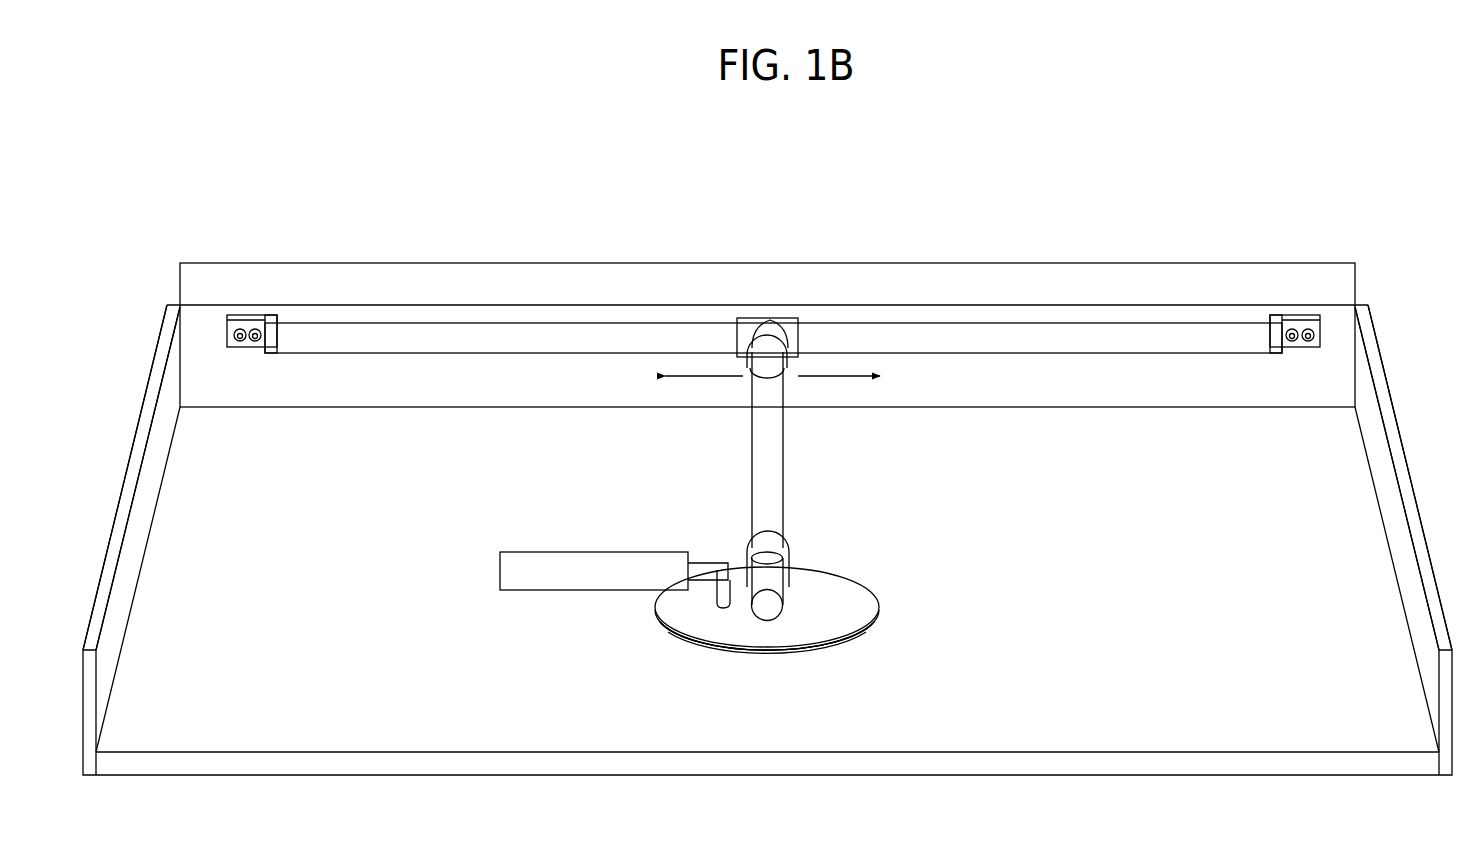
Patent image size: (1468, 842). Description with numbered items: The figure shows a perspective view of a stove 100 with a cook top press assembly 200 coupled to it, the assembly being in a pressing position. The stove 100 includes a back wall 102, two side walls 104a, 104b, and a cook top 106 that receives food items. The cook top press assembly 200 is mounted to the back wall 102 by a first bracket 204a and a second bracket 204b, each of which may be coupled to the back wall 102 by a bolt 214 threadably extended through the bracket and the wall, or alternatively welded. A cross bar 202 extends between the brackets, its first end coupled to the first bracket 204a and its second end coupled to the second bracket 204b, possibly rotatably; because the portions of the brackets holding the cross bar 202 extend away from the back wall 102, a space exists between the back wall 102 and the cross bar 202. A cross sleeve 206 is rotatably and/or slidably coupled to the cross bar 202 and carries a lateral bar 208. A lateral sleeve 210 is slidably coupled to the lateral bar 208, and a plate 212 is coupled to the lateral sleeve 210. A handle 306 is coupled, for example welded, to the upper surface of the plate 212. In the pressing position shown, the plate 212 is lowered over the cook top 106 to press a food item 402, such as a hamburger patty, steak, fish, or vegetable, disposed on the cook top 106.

The stove 100 is at (460, 190).
The back wall 102 is at (553, 370).
The side wall 104a is at (128, 556).
The side wall 104b is at (1400, 541).
The cook top 106 is at (1187, 611).
The cook top press assembly 200 is at (846, 496).
The cross bar 202 is at (862, 345).
The first bracket 204a is at (276, 318).
The second bracket 204b is at (1212, 325).
The cross sleeve 206 is at (770, 322).
The lateral bar 208 is at (768, 456).
The lateral sleeve 210 is at (762, 540).
The plate 212 is at (845, 620).
The bolt 214 is at (254, 342).
The handle 306 is at (577, 568).
The food item 402 is at (746, 675).